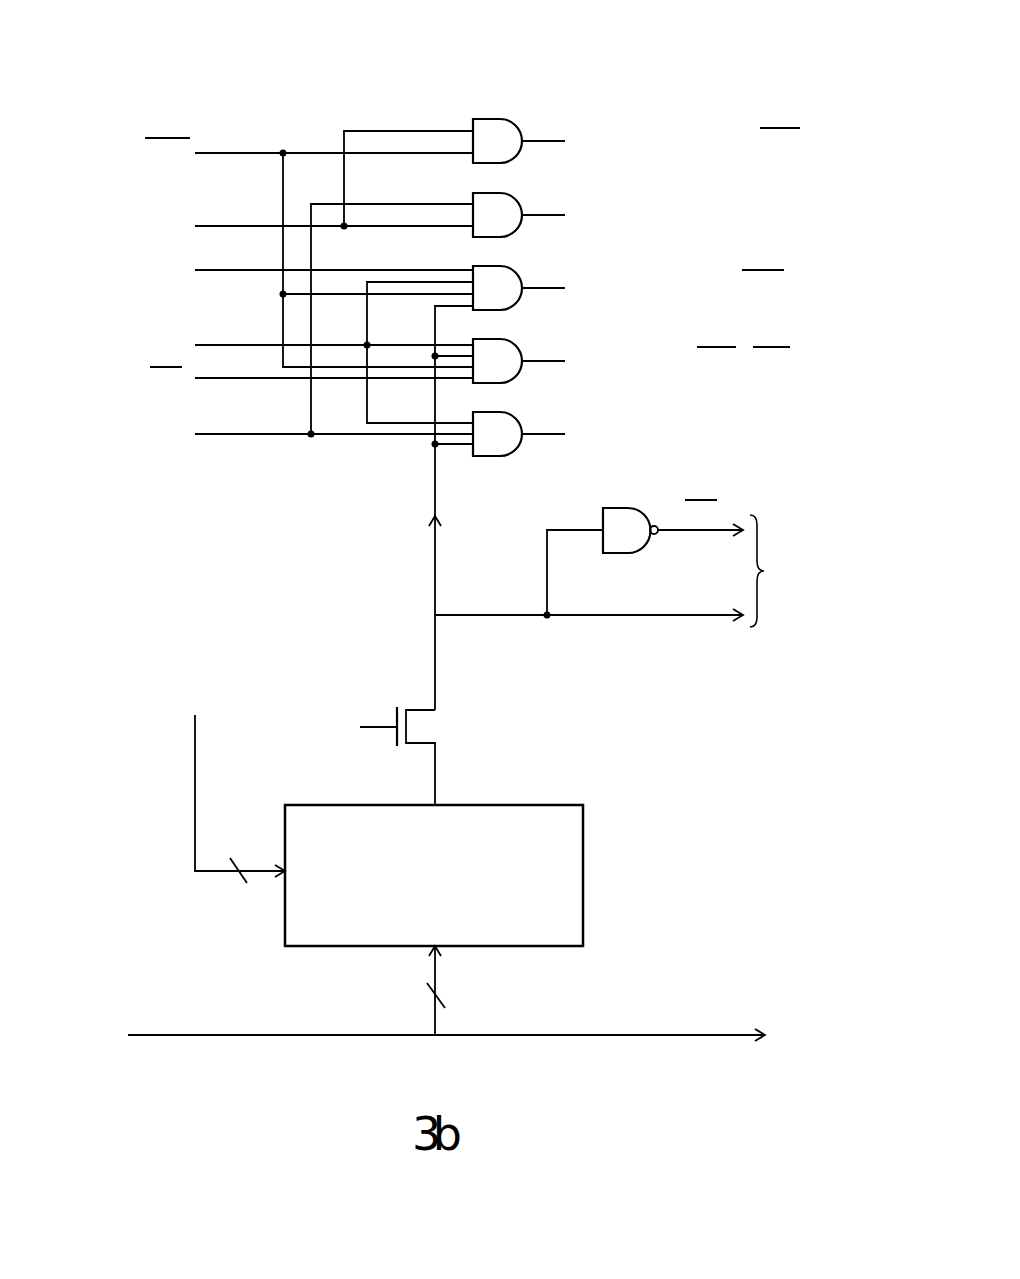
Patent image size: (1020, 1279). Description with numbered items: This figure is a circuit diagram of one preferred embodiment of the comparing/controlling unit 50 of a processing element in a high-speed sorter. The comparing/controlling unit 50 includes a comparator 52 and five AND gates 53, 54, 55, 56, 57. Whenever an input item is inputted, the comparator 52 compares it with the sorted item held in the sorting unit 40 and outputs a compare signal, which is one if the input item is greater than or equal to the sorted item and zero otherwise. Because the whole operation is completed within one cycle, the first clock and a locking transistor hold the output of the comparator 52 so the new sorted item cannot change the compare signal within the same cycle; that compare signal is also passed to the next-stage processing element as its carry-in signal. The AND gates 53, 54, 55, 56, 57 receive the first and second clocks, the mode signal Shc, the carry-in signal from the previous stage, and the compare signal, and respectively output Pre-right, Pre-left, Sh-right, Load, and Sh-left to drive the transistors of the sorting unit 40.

The comparing/controlling unit 50 is at (572, 46).
The comparator 52 is at (473, 875).
The AND gate 53 is at (519, 125).
The AND gate 54 is at (519, 199).
The AND gate 55 is at (519, 271).
The AND gate 56 is at (519, 344).
The AND gate 57 is at (519, 418).
The sorting unit 40 is at (316, 706).